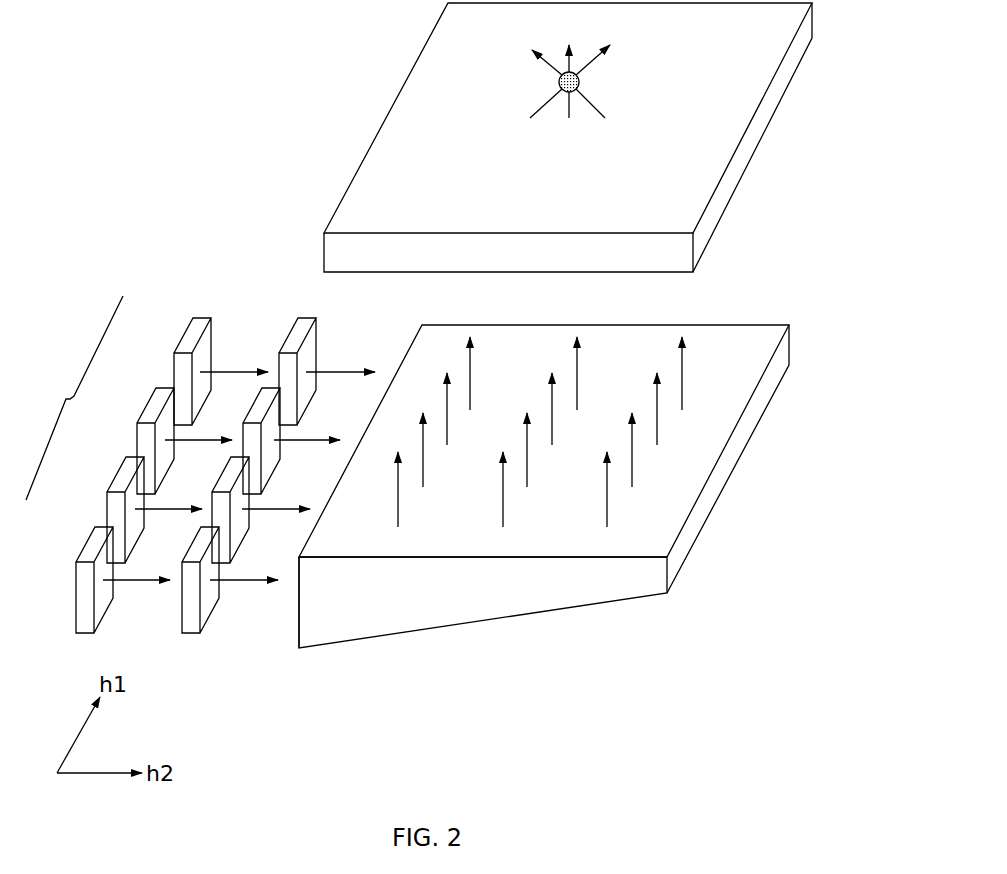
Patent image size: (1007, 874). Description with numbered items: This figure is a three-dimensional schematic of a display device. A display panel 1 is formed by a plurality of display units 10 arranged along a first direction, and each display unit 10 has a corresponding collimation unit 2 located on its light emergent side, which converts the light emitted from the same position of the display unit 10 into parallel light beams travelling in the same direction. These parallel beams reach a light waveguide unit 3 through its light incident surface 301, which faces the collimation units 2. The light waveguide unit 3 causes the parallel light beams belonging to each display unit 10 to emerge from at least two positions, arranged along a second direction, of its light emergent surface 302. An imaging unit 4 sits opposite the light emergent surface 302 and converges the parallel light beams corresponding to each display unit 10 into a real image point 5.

The display panel 1 is at (118, 464).
The display unit 10 is at (188, 340).
The collimation unit 2 is at (300, 333).
The light waveguide unit 3 is at (501, 520).
The light incident surface 301 is at (298, 633).
The light emergent surface 302 is at (662, 515).
The imaging unit 4 is at (333, 252).
The real image point 5 is at (579, 82).